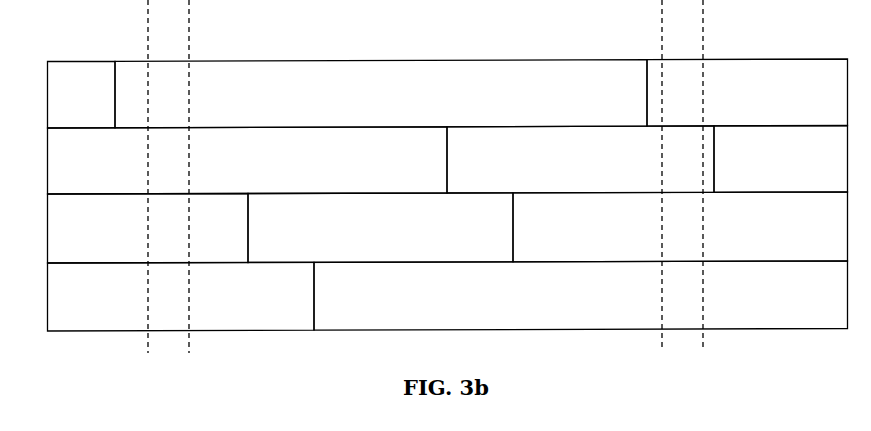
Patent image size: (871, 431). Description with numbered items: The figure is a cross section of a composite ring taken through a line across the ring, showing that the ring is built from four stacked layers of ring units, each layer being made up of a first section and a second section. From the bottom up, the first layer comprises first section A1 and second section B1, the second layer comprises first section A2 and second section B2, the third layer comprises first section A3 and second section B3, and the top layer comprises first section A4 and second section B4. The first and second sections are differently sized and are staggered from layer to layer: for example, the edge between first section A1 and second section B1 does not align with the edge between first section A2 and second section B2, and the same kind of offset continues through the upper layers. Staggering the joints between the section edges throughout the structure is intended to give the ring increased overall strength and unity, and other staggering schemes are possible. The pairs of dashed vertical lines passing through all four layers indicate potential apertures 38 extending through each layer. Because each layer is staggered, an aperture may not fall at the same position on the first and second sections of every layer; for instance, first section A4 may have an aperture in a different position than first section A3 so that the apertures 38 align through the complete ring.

The aperture 38 is at (147, 15).
The first section A1 is at (581, 295).
The second section B1 is at (181, 296).
The first section A2 is at (448, 227).
The second section B2 is at (380, 228).
The first section A3 is at (448, 160).
The second section B3 is at (580, 159).
The first section A4 is at (381, 94).
The second section B4 is at (448, 93).